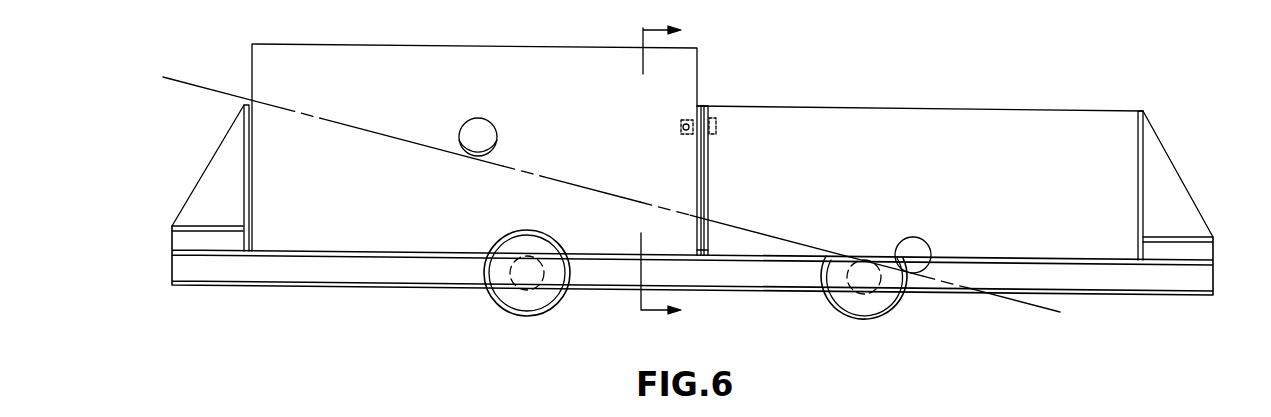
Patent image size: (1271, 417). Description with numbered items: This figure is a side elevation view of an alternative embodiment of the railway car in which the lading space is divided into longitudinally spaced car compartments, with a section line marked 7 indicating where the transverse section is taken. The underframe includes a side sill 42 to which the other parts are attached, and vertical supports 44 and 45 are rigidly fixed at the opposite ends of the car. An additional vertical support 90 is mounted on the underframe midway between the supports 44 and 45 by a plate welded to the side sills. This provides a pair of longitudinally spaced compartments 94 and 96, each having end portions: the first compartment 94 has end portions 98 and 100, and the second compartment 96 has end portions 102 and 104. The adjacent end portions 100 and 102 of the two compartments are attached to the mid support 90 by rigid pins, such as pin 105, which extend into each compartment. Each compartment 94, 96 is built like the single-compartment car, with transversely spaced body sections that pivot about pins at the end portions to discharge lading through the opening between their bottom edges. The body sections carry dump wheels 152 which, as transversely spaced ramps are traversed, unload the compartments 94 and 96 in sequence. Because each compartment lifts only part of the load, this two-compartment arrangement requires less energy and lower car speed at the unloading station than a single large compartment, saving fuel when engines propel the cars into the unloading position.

The section line 7- 7 is at (661, 172).
The side sill 42 is at (1095, 272).
The vertical support 44 is at (233, 166).
The vertical support 45 is at (1143, 138).
The vertical support 90 is at (701, 258).
The compartment 94 is at (497, 88).
The compartment 96 is at (962, 148).
The end portion 98 is at (250, 186).
The end portion 100 is at (695, 198).
The end portion 102 is at (708, 193).
The end portion 104 is at (1138, 172).
The rigid pin 105 is at (728, 105).
The dump wheel 152 is at (472, 146).